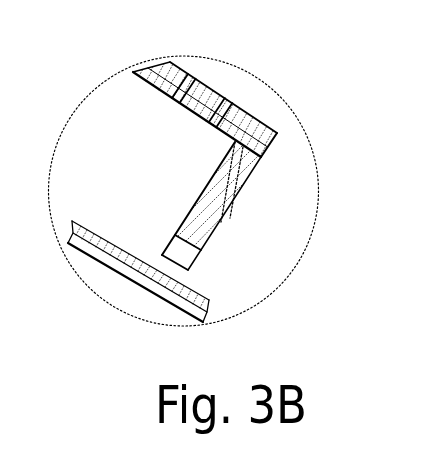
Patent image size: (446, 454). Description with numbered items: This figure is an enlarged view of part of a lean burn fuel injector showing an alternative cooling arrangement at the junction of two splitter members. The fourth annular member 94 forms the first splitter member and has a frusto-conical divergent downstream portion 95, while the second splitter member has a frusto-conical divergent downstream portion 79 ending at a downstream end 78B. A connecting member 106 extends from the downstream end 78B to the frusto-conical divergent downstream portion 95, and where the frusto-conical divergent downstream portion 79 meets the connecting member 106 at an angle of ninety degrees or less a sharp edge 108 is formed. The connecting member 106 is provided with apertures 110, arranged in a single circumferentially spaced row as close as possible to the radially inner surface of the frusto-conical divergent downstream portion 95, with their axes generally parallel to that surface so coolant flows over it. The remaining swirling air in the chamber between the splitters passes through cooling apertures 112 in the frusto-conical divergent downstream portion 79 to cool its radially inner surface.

The downstream end of the second splitter member 78B is at (258, 134).
The frusto-conical divergent downstream portion of the second splitter member 79 is at (242, 106).
The fourth annular member 94 is at (96, 250).
The frusto-conical divergent downstream portion of the first splitter member 95 is at (149, 300).
The connecting member 106 is at (216, 219).
The sharp edge 108 is at (288, 128).
The apertures 110 is at (245, 182).
The cooling apertures 112 is at (203, 72).